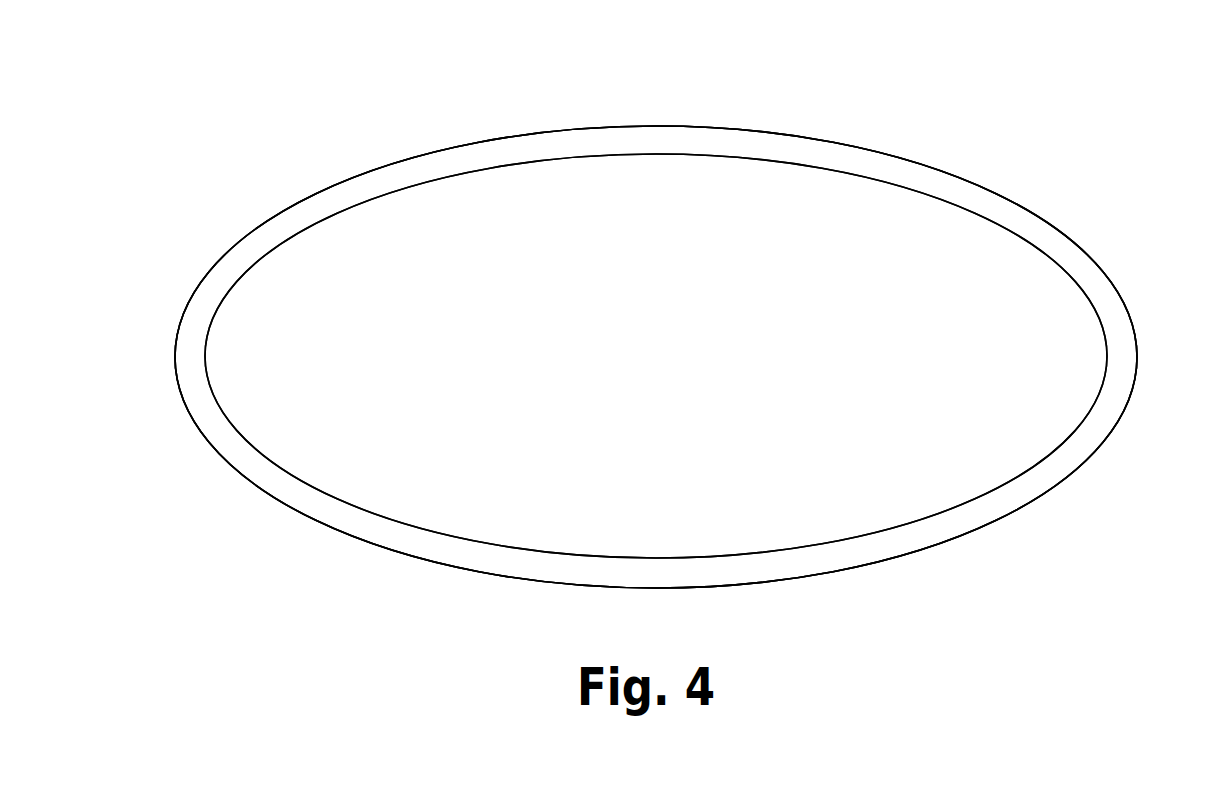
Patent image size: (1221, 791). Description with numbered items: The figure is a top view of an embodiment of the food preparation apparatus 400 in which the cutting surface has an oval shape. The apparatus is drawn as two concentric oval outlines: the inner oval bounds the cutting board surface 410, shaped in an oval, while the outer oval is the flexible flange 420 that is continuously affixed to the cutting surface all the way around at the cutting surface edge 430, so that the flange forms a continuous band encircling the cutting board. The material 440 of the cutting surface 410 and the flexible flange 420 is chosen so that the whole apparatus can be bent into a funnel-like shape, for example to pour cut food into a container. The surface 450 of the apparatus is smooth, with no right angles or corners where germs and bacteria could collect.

The food preparation apparatus 400 is at (287, 80).
The cutting board surface 410 is at (533, 248).
The flexible flange 420 is at (788, 147).
The cutting surface edge 430 is at (998, 225).
The material 440 is at (1020, 345).
The surface 450 is at (788, 487).